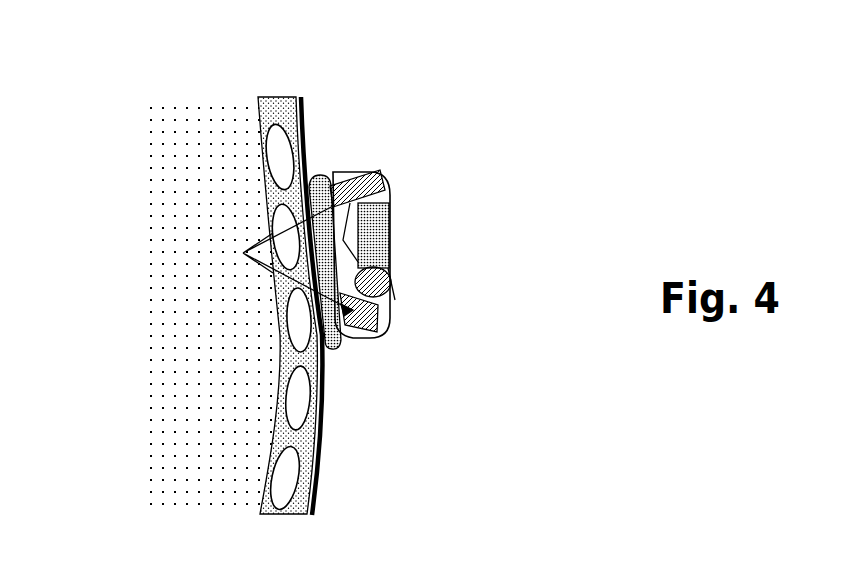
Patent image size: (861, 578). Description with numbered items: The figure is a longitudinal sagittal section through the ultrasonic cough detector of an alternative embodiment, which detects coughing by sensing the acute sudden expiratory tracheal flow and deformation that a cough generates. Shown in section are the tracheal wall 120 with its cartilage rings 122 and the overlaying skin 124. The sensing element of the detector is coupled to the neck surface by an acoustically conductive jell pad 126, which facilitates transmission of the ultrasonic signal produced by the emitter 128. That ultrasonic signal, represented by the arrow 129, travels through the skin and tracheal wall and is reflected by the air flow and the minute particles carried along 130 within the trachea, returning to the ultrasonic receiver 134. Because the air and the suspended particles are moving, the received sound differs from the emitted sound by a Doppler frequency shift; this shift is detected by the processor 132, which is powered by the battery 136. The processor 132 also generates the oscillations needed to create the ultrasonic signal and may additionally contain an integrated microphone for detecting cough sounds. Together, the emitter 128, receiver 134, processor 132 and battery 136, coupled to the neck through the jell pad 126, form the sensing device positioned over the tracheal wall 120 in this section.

The tracheal wall 120 is at (258, 113).
The cartilage rings 122 is at (293, 402).
The skin 124 is at (303, 147).
The acoustically conductive jell pad 126 is at (332, 345).
The emitter 128 is at (377, 177).
The arrow 129 is at (243, 253).
The air flow and minute particles 130 is at (220, 330).
The processor 132 is at (387, 240).
The ultrasonic receiver 134 is at (378, 336).
The battery 136 is at (394, 298).